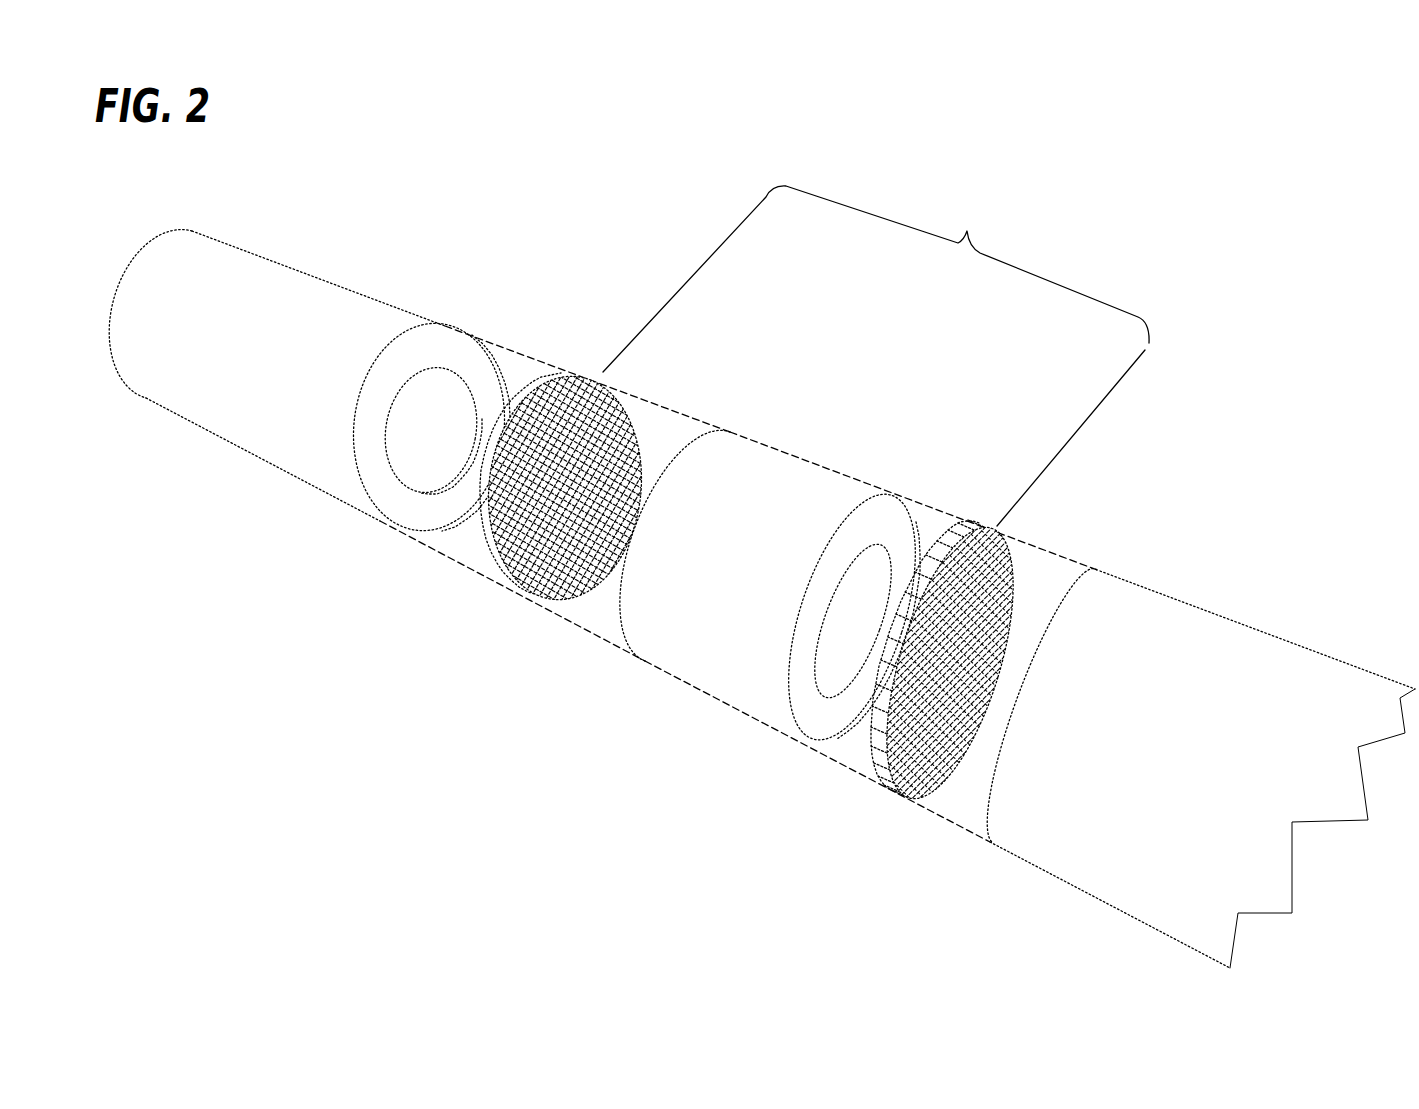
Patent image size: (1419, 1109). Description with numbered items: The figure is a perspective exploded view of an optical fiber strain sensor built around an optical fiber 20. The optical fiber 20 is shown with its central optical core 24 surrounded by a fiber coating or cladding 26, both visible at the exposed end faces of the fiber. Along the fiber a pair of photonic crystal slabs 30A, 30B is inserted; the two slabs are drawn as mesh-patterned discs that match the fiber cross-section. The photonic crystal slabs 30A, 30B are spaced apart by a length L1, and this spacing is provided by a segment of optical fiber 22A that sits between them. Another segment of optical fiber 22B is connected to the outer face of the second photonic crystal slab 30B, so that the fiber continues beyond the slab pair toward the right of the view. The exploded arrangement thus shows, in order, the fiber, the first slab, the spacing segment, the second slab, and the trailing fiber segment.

The optical fiber 20 is at (258, 272).
The segment of optical fiber 22A is at (687, 478).
The segment of optical fiber 22B is at (1137, 620).
The optical core 24 is at (442, 415).
The fiber coating or cladding 26 is at (428, 353).
The photonic crystal slab 30A is at (490, 546).
The photonic crystal slab 30B is at (880, 757).
The length L1 is at (876, 356).